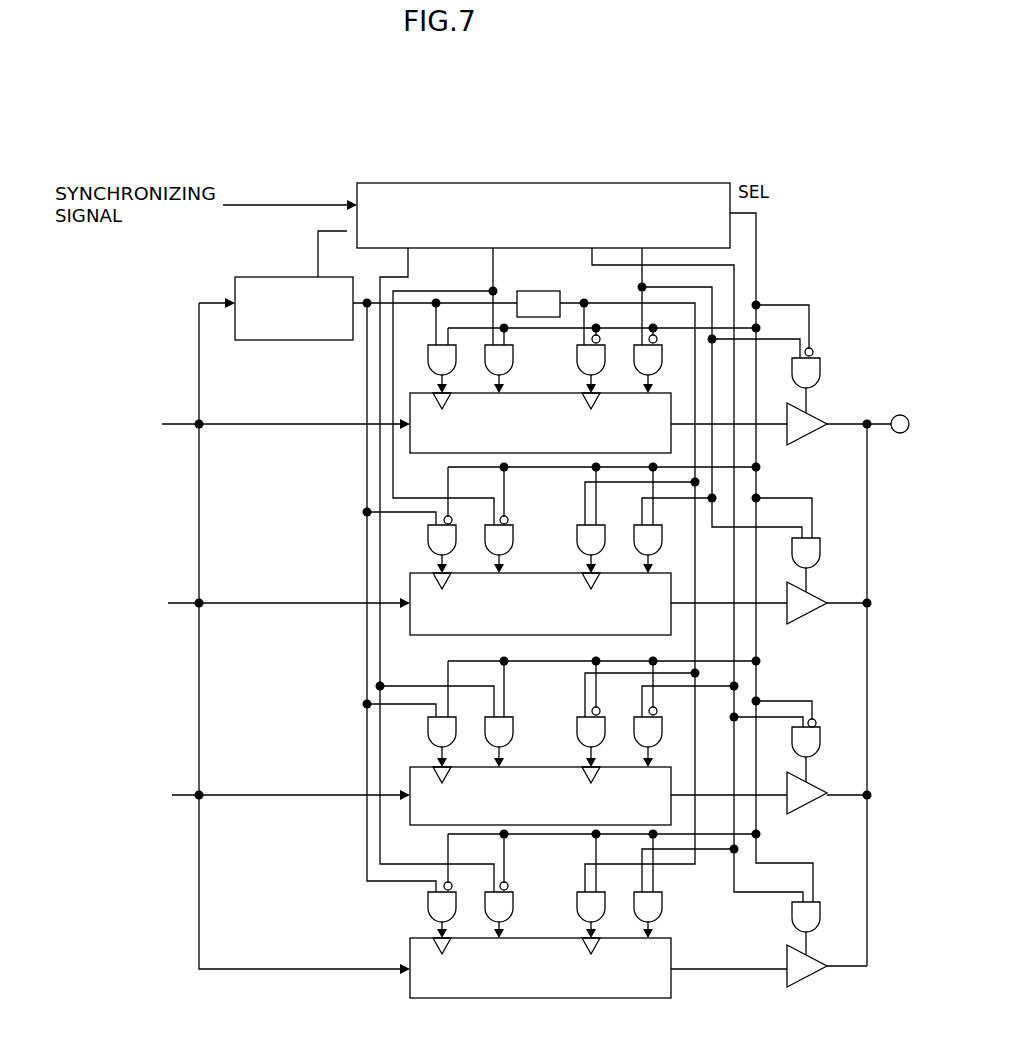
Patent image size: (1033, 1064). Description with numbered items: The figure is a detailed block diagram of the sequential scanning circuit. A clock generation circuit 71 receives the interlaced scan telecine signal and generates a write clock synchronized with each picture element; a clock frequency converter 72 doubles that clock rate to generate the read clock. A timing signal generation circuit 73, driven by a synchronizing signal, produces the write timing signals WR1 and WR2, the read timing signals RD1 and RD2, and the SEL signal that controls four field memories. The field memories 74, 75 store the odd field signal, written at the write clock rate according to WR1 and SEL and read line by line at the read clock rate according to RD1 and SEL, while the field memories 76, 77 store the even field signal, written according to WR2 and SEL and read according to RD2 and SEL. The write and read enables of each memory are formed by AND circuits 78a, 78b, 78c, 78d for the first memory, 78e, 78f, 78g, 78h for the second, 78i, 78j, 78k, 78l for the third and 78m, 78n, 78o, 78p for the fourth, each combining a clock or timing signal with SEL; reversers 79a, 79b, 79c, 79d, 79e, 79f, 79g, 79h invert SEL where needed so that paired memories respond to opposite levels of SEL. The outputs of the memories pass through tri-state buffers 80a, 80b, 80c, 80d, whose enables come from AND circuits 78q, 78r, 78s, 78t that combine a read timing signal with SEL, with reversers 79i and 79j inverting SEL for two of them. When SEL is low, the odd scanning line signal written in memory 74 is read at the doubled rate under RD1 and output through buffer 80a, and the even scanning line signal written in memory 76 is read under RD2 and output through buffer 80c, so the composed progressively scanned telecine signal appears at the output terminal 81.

The clock generation circuit 71 is at (262, 277).
The clock frequency converter 72 is at (520, 291).
The timing signal generation circuit 73 is at (378, 183).
The field memory 74 is at (410, 410).
The field memory 75 is at (410, 580).
The field memory 76 is at (410, 775).
The field memory 77 is at (410, 958).
The AND circuit 78a is at (429, 362).
The AND circuit 78b is at (458, 368).
The AND circuit 78c is at (577, 362).
The AND circuit 78d is at (634, 358).
The AND circuit 78e is at (429, 542).
The AND circuit 78f is at (459, 540).
The AND circuit 78g is at (578, 532).
The AND circuit 78h is at (652, 545).
The AND circuit 78i is at (429, 732).
The AND circuit 78j is at (507, 717).
The AND circuit 78k is at (578, 742).
The AND circuit 78l is at (661, 738).
The AND circuit 78m is at (429, 905).
The AND circuit 78n is at (459, 905).
The AND circuit 78o is at (578, 912).
The AND circuit 78p is at (661, 910).
The AND circuit 78q is at (821, 372).
The AND circuit 78r is at (821, 546).
The AND circuit 78s is at (793, 742).
The AND circuit 78t is at (821, 912).
The reverser 79a is at (600, 343).
The reverser 79b is at (657, 343).
The reverser 79c is at (446, 516).
The reverser 79d is at (506, 516).
The reverser 79e is at (592, 712).
The reverser 79f is at (656, 710).
The reverser 79g is at (446, 881).
The reverser 79h is at (507, 881).
The reverser 79i is at (813, 349).
The reverser 79j is at (817, 722).
The tri-state buffer 80a is at (815, 418).
The tri-state buffer 80b is at (805, 618).
The tri-state buffer 80c is at (805, 807).
The tri-state buffer 80d is at (810, 985).
The output terminal 81 is at (898, 434).